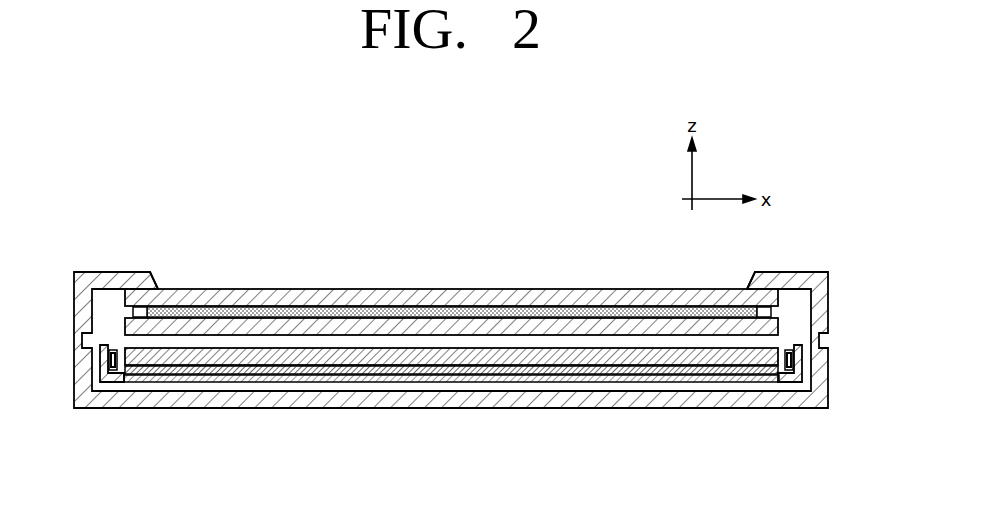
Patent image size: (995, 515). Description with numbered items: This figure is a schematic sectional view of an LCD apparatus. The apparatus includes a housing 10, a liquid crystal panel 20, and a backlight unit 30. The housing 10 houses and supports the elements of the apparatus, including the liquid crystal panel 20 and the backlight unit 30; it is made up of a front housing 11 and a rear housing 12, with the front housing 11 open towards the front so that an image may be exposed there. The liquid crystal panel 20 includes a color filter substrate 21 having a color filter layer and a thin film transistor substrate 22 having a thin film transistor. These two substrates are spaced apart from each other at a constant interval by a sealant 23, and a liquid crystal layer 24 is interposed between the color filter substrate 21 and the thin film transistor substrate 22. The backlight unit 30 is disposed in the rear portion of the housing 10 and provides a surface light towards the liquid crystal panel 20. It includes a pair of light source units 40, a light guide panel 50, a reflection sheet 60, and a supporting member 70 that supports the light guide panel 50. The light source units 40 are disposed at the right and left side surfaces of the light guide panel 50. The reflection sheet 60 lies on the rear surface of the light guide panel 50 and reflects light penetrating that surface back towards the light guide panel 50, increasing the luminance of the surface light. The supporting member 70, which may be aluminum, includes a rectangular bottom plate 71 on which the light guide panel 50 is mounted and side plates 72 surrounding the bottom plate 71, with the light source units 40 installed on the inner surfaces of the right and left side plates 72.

The housing 10 is at (62, 327).
The front housing 11 is at (110, 277).
The rear housing 12 is at (105, 404).
The liquid crystal panel 20 is at (450, 275).
The color filter substrate 21 is at (487, 291).
The thin film transistor substrate 22 is at (562, 312).
The sealant 23 is at (133, 311).
The liquid crystal layer 24 is at (625, 325).
The backlight unit 30 is at (353, 336).
The light source unit 40 is at (121, 390).
The light guide panel 50 is at (597, 360).
The reflection sheet 60 is at (658, 370).
The supporting member 70 is at (443, 397).
The bottom plate 71 is at (535, 380).
The side plates 72 is at (100, 367).